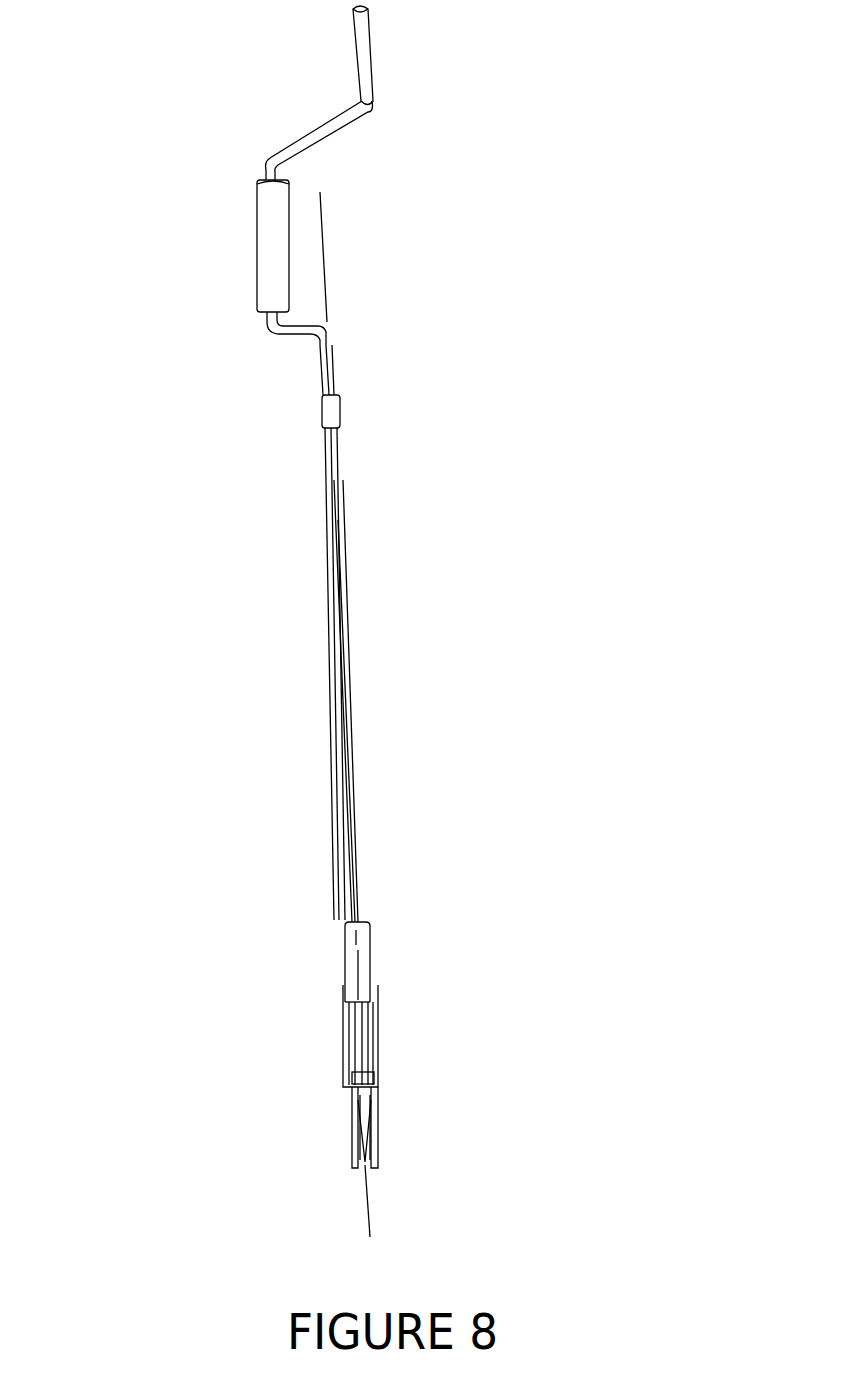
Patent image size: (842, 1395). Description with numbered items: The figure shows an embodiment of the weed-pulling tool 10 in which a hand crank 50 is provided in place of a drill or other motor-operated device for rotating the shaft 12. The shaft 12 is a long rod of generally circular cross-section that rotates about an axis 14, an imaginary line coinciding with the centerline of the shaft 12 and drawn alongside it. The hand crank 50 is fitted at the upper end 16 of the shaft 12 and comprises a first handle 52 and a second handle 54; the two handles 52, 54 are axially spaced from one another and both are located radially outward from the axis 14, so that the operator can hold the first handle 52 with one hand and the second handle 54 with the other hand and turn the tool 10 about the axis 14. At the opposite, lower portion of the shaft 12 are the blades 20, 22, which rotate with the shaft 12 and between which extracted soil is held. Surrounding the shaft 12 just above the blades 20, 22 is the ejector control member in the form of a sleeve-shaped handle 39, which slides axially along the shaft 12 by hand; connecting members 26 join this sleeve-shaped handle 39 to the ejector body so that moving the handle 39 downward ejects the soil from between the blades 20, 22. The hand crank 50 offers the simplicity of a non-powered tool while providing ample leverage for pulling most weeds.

The tool 10 is at (440, 607).
The shaft 12 is at (353, 805).
The axis 14 is at (327, 278).
The upper end 16 is at (333, 456).
The blade 20 is at (355, 1103).
The blade 22 is at (373, 1128).
The connecting members 26 is at (350, 1022).
The sleeve-shaped handle 39 is at (363, 965).
The hand crank 50 is at (457, 181).
The first handle 52 is at (270, 245).
The second handle 54 is at (367, 44).